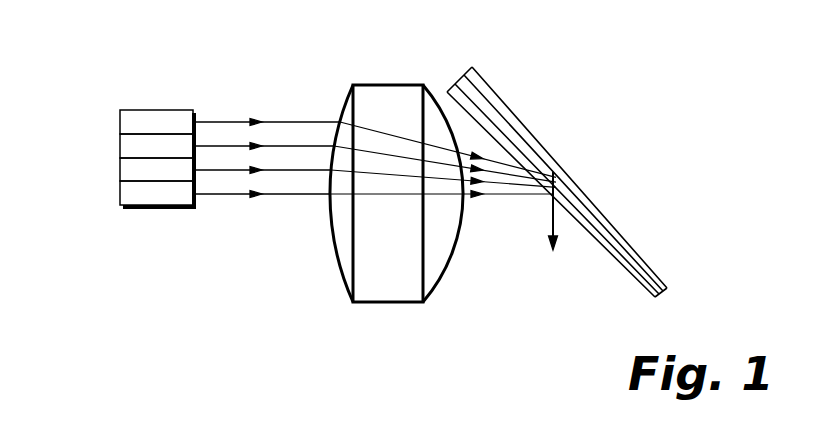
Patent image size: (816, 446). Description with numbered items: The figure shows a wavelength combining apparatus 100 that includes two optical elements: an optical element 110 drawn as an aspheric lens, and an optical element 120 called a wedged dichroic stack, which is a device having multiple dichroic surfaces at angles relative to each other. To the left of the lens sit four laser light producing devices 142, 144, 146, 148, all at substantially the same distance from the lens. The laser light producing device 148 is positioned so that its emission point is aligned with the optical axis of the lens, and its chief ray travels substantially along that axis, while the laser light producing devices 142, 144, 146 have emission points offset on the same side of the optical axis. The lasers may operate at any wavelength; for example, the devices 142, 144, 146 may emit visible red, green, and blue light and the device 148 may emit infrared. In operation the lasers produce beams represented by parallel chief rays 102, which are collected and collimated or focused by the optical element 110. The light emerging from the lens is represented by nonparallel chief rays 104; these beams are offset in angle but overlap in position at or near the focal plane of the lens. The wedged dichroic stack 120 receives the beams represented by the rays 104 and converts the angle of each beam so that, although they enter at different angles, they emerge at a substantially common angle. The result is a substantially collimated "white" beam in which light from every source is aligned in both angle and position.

The wavelength combining apparatus 100 is at (553, 84).
The parallel chief rays 102 is at (255, 212).
The nonparallel chief rays 104 is at (497, 207).
The optical element 110 is at (372, 304).
The wedged dichroic stack 120 is at (597, 208).
The laser light producing device 142 is at (135, 109).
The laser light producing device 144 is at (120, 146).
The laser light producing device 146 is at (120, 168).
The laser light producing device 148 is at (135, 206).